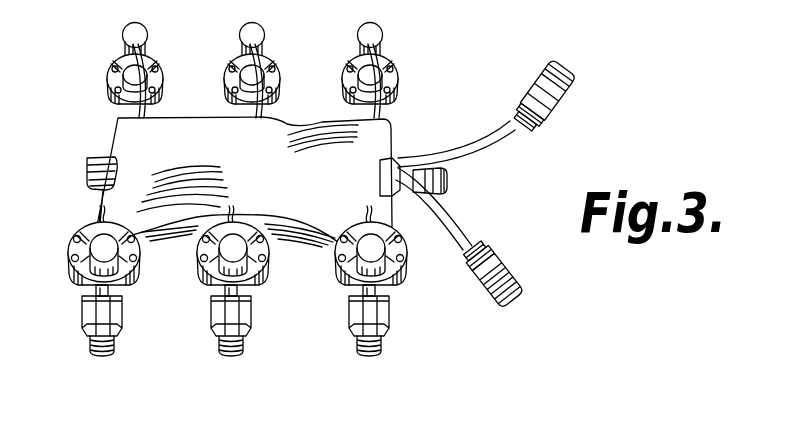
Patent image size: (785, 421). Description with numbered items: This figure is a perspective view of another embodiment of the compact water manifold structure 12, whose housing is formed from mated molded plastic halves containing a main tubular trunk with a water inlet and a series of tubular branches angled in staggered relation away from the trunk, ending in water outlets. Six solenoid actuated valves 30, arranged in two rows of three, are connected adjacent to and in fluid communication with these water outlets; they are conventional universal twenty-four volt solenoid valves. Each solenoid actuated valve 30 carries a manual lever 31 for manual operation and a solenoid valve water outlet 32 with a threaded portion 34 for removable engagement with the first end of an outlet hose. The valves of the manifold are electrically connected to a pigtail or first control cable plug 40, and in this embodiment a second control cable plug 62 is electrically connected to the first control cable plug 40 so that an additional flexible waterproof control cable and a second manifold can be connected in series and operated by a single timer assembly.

The compact water manifold structure 12 is at (294, 136).
The solenoid actuated valve 30 is at (160, 64).
The manual lever 31 is at (122, 293).
The solenoid valve water outlet 32 is at (102, 356).
The threaded portion 34 is at (112, 345).
The first control cable plug 40 is at (467, 158).
The second control cable plug 62 is at (512, 262).